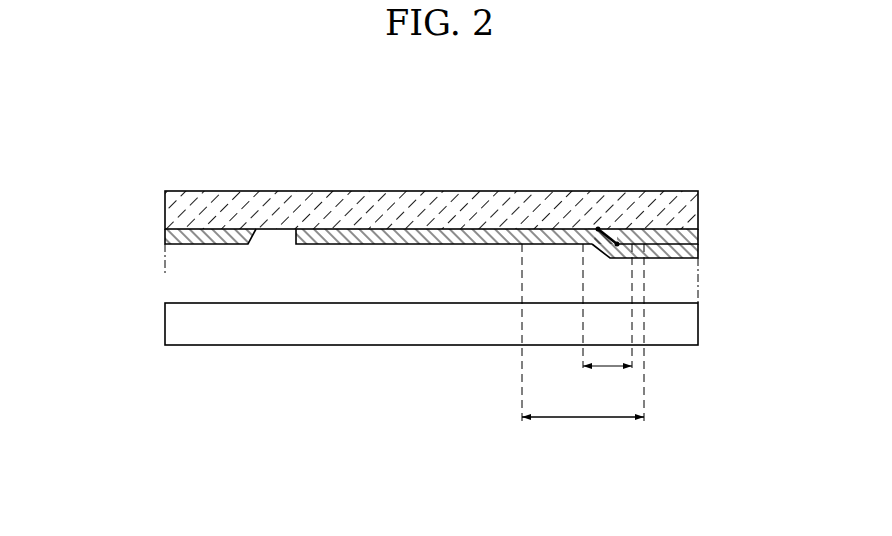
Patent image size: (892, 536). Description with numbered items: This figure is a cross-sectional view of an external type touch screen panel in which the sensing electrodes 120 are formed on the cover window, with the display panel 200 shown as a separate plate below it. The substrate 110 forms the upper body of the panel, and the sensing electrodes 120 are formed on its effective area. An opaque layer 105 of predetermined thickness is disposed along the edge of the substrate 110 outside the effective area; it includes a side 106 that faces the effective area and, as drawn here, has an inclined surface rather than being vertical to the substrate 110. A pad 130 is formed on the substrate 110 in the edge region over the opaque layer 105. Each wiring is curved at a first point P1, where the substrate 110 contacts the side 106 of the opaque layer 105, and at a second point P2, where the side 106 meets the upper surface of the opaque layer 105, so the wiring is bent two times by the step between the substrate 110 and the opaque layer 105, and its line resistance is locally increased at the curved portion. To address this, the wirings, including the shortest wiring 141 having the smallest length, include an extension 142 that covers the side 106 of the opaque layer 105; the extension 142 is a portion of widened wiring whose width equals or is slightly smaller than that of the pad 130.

The substrate 110 is at (245, 200).
The sensing electrodes 120 is at (383, 232).
The opaque layer 105 is at (177, 235).
The pad 130 is at (692, 250).
The side 106 is at (612, 236).
The first point P1 is at (598, 228).
The second point P2 is at (617, 245).
The display panel 200 is at (313, 328).
The extension 142 is at (607, 321).
The shortest wiring 141 is at (583, 348).